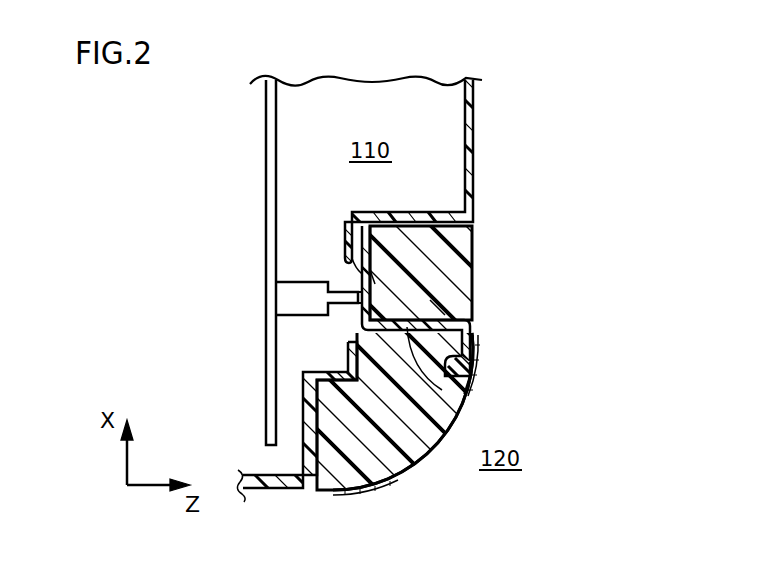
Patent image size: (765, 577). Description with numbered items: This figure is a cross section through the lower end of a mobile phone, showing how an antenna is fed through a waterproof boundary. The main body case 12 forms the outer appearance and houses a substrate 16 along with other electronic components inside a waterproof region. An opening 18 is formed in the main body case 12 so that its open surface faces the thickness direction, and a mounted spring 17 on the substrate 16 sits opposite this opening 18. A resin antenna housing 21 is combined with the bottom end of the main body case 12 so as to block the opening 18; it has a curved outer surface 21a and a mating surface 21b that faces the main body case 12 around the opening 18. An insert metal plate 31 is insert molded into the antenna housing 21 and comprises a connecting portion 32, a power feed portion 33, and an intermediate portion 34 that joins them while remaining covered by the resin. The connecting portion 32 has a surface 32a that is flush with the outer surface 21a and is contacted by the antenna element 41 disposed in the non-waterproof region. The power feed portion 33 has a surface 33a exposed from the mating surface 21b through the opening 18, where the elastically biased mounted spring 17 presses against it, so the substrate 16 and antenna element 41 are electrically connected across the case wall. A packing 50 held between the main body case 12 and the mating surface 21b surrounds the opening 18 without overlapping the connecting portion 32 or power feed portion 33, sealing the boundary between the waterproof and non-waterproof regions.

The main body case 12 is at (473, 130).
The substrate 16 is at (266, 165).
The mounted spring 17 is at (292, 282).
The opening 18 is at (375, 277).
The antenna housing 21 is at (343, 455).
The outer surface 21a is at (427, 455).
The mating surface 21b is at (353, 340).
The insert metal plate 31 is at (436, 311).
The connecting portion 32 is at (472, 338).
The surface 32a is at (477, 335).
The power feed portion 33 is at (357, 310).
The surface 33a is at (357, 282).
The intermediate portion 34 is at (407, 327).
The antenna element 41 is at (477, 367).
The packing 50 is at (460, 245).